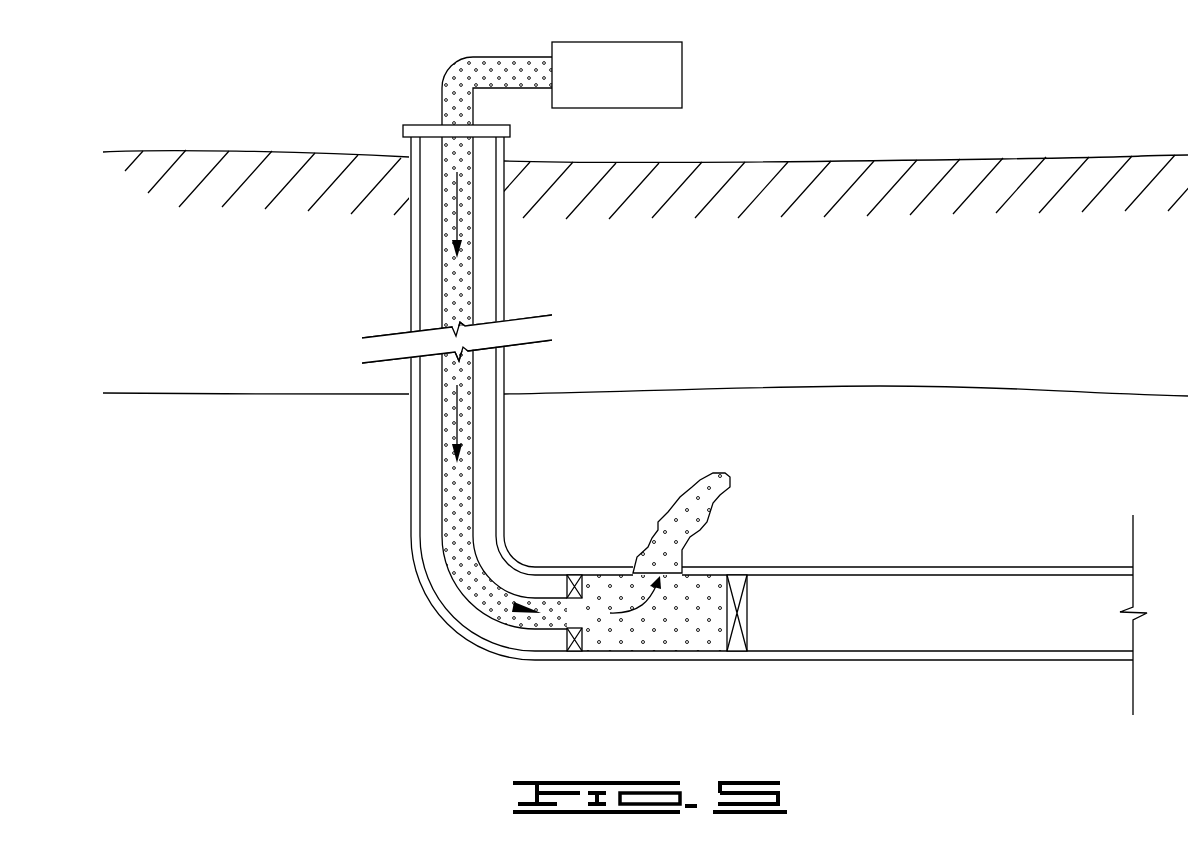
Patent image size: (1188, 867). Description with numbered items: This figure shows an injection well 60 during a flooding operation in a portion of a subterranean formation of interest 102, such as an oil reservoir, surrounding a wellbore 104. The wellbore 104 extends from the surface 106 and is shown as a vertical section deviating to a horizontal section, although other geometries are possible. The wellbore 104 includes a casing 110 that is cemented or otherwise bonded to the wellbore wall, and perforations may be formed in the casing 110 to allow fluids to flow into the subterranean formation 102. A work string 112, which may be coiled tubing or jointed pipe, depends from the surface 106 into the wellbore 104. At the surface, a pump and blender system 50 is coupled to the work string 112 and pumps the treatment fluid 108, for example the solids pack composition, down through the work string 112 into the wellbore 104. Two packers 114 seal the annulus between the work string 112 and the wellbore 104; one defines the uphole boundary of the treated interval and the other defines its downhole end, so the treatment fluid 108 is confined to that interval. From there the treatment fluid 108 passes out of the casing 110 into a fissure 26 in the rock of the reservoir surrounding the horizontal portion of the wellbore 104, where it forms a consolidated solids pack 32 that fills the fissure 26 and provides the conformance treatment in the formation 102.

The treatment fluid 108 is at (457, 63).
The pump and blender system 50 is at (633, 86).
The surface 106 is at (1062, 157).
The casing 110 is at (418, 270).
The wellbore 104 is at (410, 312).
The work string 112 is at (443, 485).
The packers 114 is at (575, 575).
The fissure 26 is at (688, 492).
The consolidated solids pack 32 is at (695, 520).
The subterranean formation of interest 102 is at (900, 469).
The injection well 60 is at (425, 652).